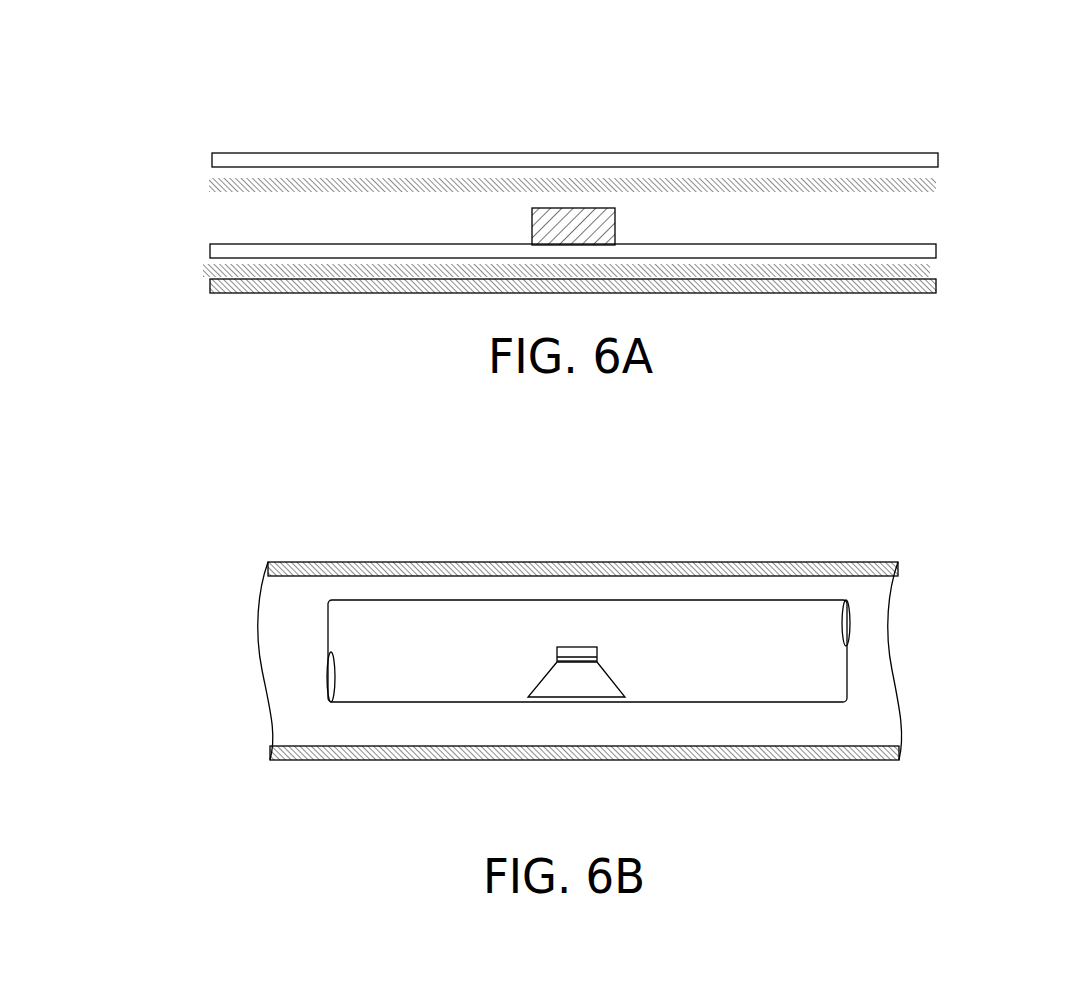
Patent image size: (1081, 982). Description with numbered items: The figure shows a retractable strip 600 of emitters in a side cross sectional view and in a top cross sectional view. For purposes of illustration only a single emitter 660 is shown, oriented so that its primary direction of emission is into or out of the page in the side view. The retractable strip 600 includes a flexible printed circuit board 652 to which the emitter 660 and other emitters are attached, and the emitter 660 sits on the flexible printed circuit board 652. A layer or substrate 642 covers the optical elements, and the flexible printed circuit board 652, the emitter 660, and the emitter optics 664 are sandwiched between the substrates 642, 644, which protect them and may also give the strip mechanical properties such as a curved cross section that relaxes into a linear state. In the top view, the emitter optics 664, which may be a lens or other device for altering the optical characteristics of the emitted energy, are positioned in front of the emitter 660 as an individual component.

In FIG. 6A, the retractable strip 600 is at (176, 155).
In FIG. 6B, the retractable strip 600 is at (212, 569).
In FIG. 6A, the substrate 642 is at (940, 180).
In FIG. 6B, the substrate 642 is at (855, 559).
In FIG. 6A, the substrate 644 is at (938, 283).
In FIG. 6A, the flexible printed circuit board 652 is at (938, 247).
In FIG. 6B, the flexible printed circuit board 652 is at (858, 680).
In FIG. 6A, the emitter 660 is at (580, 206).
In FIG. 6B, the emitter 660 is at (578, 641).
In FIG. 6B, the emitter optics 664 is at (579, 683).